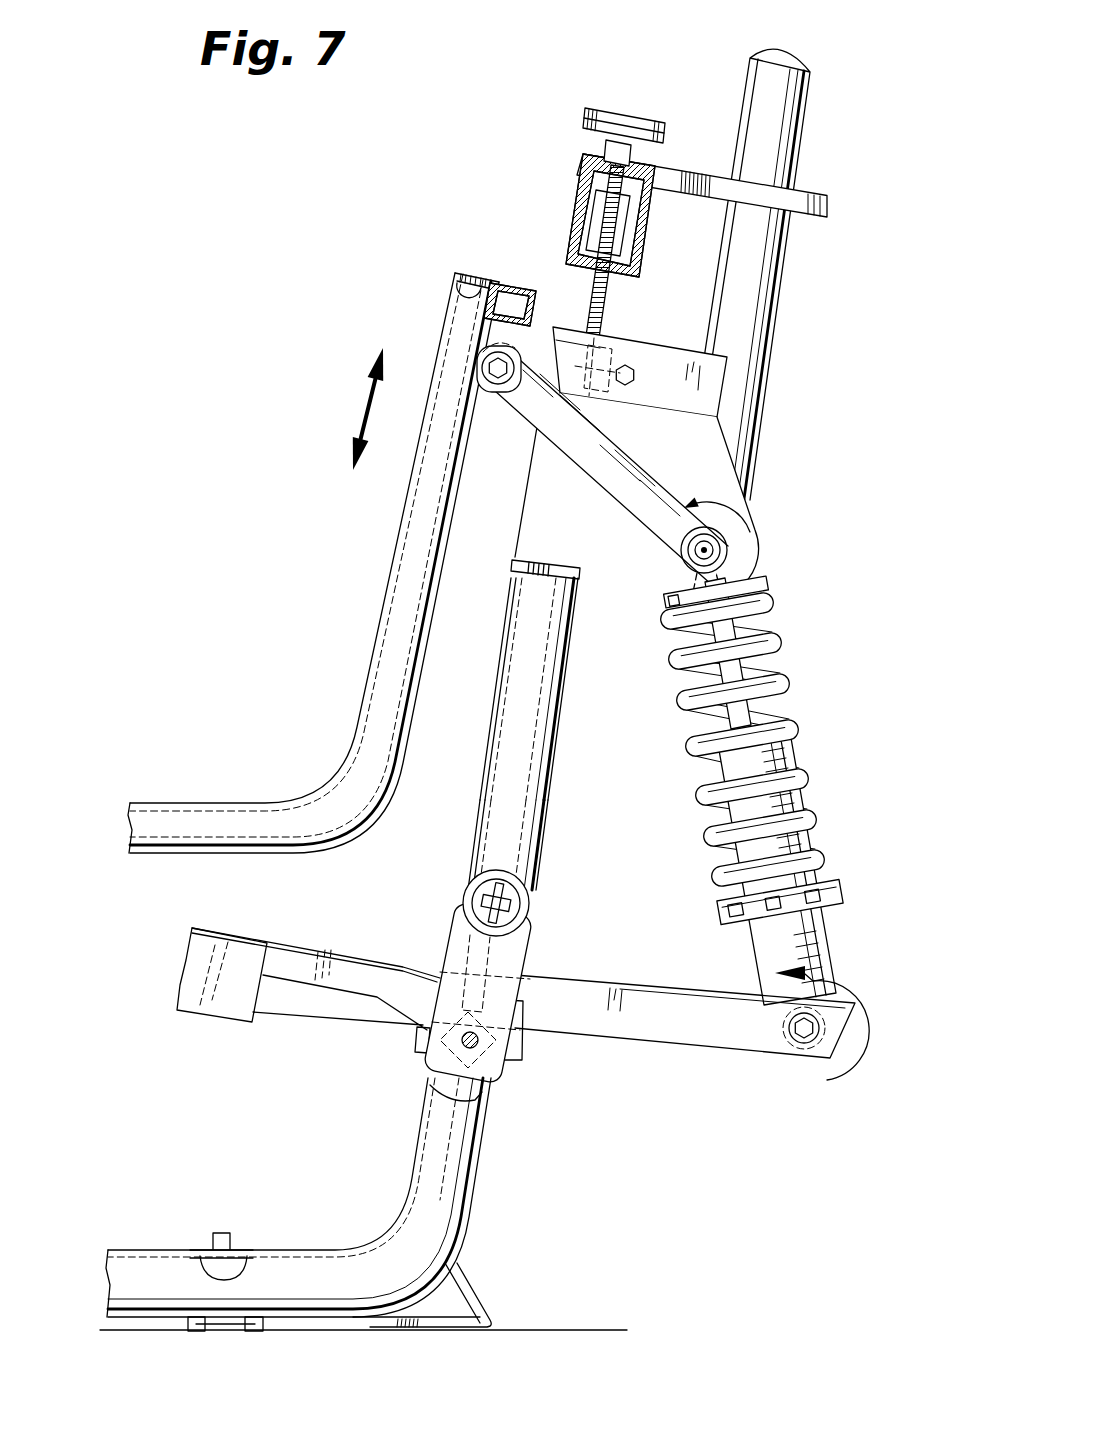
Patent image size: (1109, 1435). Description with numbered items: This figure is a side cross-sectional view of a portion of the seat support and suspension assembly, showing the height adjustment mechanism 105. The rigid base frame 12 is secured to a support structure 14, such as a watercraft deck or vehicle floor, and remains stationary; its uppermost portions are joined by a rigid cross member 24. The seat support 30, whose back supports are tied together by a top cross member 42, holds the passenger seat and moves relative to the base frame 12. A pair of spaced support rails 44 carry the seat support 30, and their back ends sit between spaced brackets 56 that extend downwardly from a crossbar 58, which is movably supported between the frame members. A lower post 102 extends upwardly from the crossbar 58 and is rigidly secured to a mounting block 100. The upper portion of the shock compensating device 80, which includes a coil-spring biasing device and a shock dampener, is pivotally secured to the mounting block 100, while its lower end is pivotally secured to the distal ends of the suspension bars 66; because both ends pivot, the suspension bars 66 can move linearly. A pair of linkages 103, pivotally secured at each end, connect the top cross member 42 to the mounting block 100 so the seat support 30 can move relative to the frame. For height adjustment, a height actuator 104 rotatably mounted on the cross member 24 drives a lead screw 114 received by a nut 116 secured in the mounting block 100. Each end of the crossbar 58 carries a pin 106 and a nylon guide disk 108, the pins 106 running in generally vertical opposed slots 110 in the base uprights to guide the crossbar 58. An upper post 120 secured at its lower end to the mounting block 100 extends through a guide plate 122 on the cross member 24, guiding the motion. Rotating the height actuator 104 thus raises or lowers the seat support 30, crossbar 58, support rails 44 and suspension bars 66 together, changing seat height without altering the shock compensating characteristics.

The base frame 12 is at (400, 1180).
The support structure 14 is at (570, 1330).
The cross member 24 is at (580, 207).
The seat support 30 is at (386, 607).
The top cross member 42 is at (508, 282).
The support rails 44 is at (303, 960).
The brackets 56 is at (513, 960).
The crossbar 58 is at (500, 888).
The suspension bars 66 is at (580, 1013).
The shock compensating device 80 is at (830, 684).
The mounting block 100 is at (707, 465).
The lower post 102 is at (513, 672).
The linkages 103 is at (570, 437).
The height actuator 104 is at (618, 118).
The height adjustment mechanism 105 is at (703, 251).
The pin 106 is at (483, 873).
The guide disk 108 is at (525, 892).
The slots 110 is at (453, 953).
The lead screw 114 is at (587, 300).
The nut 116 is at (607, 352).
The upper post 120 is at (818, 76).
The guide plate 122 is at (830, 207).